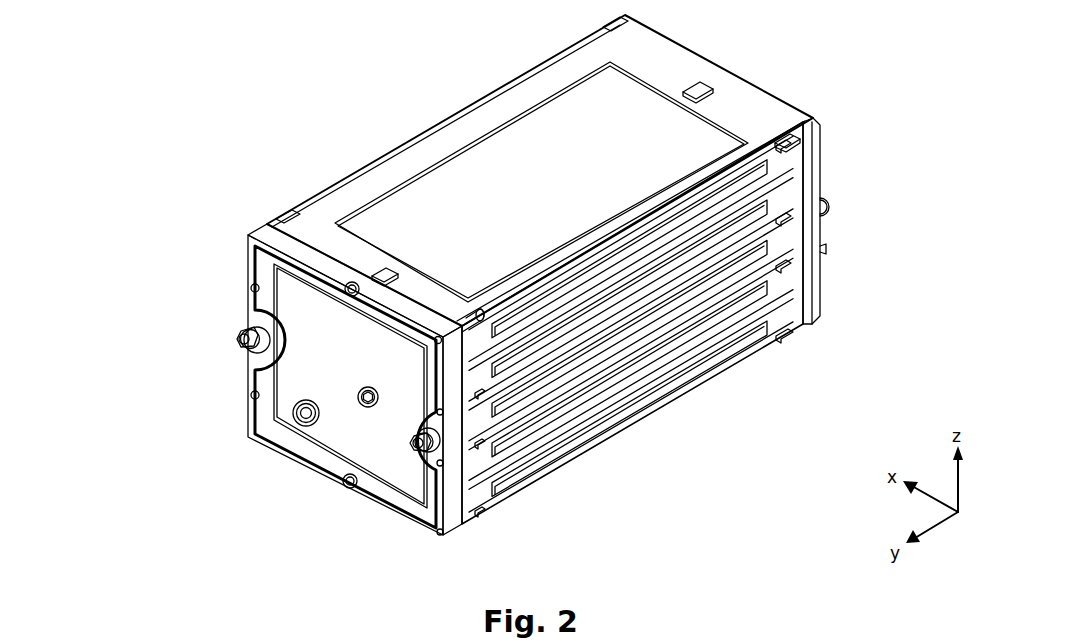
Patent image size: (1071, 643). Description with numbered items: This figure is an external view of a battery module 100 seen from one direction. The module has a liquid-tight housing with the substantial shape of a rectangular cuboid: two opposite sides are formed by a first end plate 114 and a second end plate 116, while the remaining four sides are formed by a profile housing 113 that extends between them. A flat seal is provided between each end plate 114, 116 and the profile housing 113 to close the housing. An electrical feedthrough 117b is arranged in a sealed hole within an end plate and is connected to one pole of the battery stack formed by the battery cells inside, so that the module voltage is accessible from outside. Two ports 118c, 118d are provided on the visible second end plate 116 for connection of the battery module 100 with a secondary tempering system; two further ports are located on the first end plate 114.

The battery module 100 is at (355, 56).
The profile housing 113 is at (675, 373).
The first end plate 114 is at (810, 292).
The second end plate 116 is at (450, 498).
The electrical feedthrough 117b is at (302, 407).
The port 118c is at (245, 325).
The port 118d is at (443, 440).